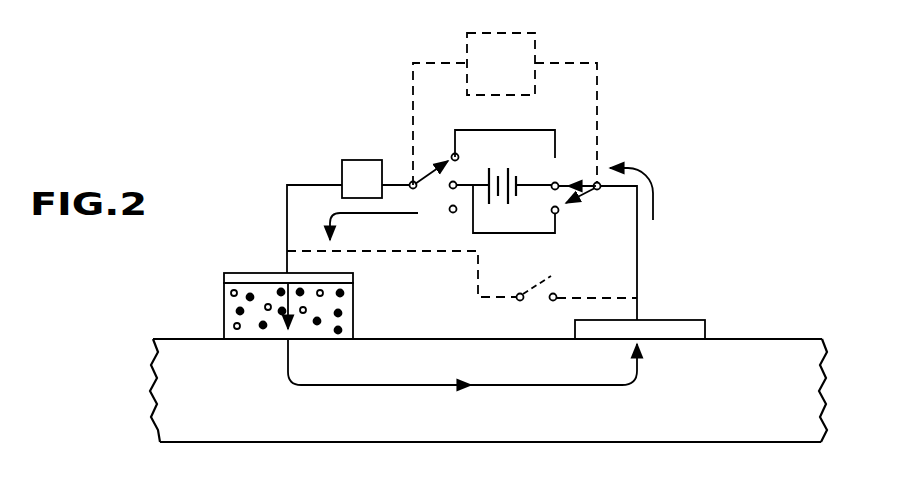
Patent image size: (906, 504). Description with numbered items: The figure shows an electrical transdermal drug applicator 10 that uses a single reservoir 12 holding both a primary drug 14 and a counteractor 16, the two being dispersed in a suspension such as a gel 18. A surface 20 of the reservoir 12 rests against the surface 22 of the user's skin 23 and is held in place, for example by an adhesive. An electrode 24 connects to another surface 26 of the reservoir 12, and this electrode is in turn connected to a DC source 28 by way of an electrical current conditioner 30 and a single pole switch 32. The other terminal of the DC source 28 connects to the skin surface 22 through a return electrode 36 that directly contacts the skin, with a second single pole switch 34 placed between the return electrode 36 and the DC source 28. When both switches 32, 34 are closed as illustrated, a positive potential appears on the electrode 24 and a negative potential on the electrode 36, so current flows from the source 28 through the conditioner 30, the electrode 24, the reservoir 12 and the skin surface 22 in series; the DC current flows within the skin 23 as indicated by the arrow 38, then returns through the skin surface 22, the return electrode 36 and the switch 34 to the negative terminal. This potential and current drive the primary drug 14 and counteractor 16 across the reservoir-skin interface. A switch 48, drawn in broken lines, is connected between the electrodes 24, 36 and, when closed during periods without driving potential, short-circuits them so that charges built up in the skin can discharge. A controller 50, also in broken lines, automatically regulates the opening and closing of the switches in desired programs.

The electrical transdermal drug applicator 10 is at (692, 180).
The reservoir 12 is at (219, 291).
The primary drug 14 is at (342, 313).
The counteractor 16 is at (342, 293).
The gel 18 is at (230, 308).
The surface of the reservoir 20 is at (323, 339).
The skin surface 22 is at (748, 339).
The skin 23 is at (182, 393).
The electrode 24 is at (260, 273).
The other surface of the reservoir 26 is at (327, 283).
The DC source 28 is at (518, 162).
The electrical current conditioner 30 is at (357, 168).
The single pole switch 32 is at (432, 167).
The single pole switch 34 is at (576, 177).
The return electrode 36 is at (672, 330).
The arrow 38 is at (508, 385).
The switch 48 is at (462, 275).
The controller 50 is at (524, 49).